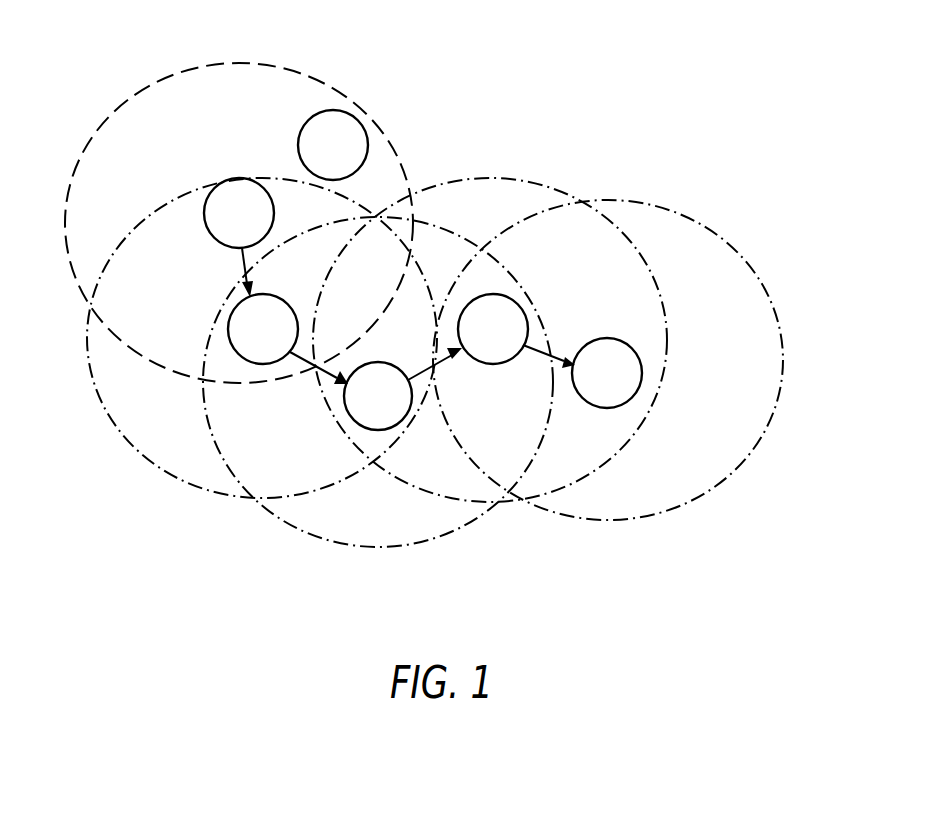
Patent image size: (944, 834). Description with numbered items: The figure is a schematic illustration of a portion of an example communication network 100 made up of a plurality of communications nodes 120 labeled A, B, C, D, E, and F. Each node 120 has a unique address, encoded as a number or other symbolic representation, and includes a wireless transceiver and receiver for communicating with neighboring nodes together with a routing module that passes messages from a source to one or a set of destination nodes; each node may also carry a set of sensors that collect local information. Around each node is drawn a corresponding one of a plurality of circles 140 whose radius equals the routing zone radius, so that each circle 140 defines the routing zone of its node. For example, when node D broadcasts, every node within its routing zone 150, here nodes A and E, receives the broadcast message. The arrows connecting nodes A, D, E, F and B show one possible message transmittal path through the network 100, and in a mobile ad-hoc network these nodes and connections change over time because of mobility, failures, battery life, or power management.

The network 100 is at (424, 280).
The communications nodes 120 is at (343, 110).
The circles 140 is at (700, 227).
The routing zone 150 is at (160, 470).